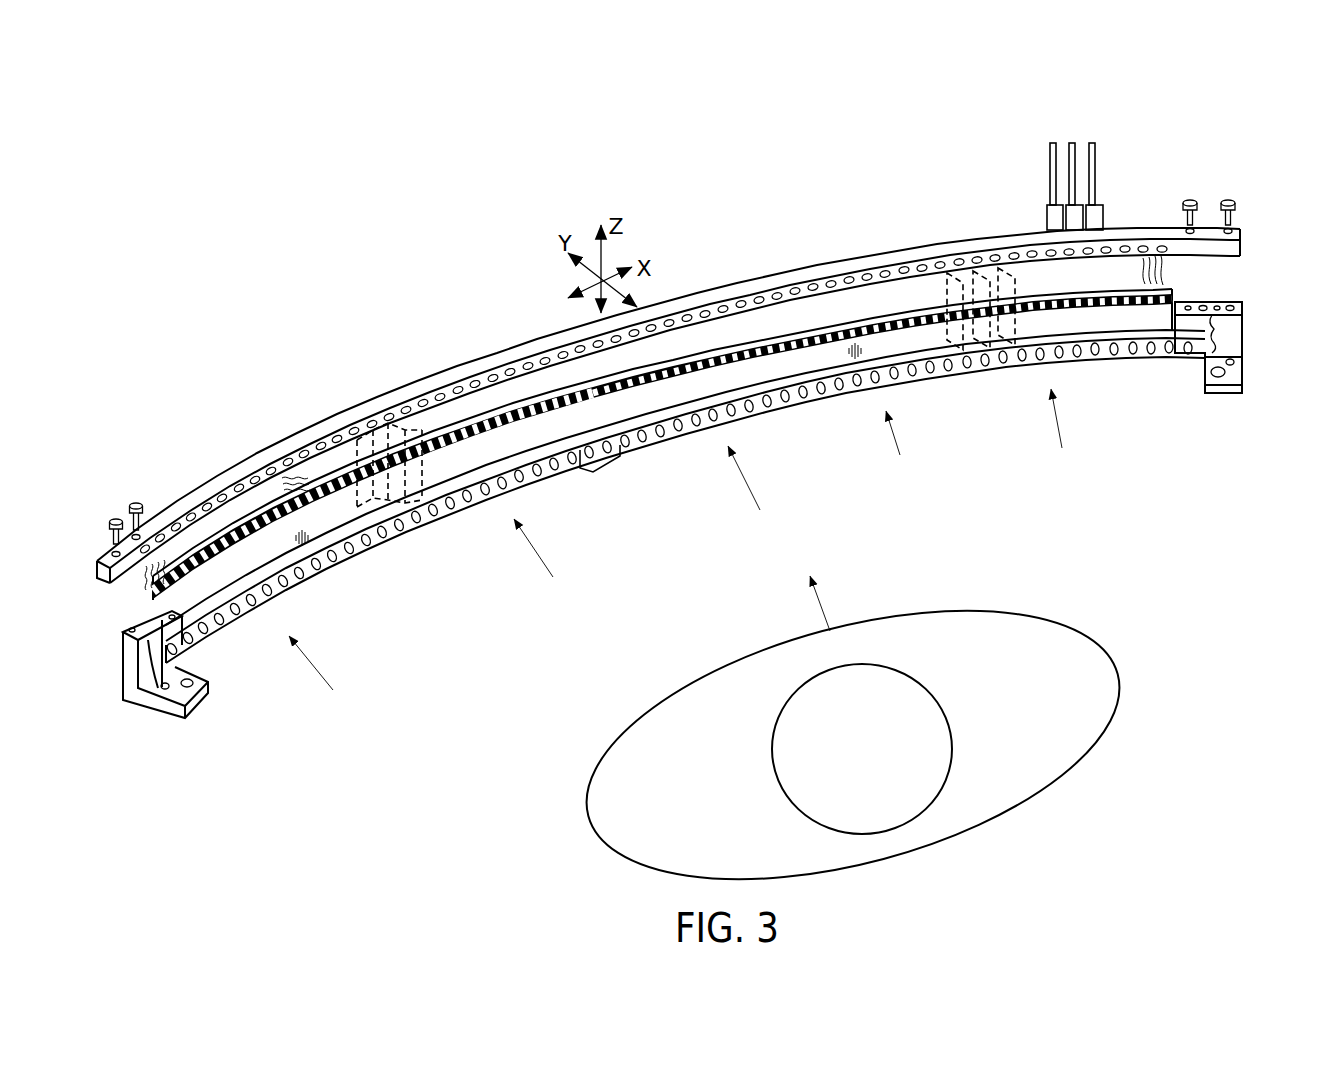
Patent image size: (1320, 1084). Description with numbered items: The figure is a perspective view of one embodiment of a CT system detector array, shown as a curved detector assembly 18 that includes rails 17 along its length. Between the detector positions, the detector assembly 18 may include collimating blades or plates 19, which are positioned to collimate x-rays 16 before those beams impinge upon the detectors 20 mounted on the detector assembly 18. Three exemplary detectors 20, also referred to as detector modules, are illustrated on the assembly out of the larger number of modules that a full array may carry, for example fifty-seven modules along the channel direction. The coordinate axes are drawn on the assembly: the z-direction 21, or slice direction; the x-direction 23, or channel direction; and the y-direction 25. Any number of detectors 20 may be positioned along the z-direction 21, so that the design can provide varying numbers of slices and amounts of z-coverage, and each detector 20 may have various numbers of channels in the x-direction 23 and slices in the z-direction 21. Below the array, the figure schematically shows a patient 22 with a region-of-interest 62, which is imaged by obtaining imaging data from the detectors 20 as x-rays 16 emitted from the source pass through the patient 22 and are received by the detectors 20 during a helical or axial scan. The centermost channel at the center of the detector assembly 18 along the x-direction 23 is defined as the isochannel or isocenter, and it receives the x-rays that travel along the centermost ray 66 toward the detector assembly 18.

The x-rays 16 is at (547, 577).
The rails 17 is at (1228, 331).
The detector assembly 18 is at (419, 360).
The collimating blades or plates 19 is at (392, 530).
The detectors 20 is at (1097, 160).
The z-direction 21 is at (598, 274).
The patient 22 is at (1130, 679).
The x-direction 23 is at (618, 266).
The y-direction 25 is at (582, 283).
The region-of-interest 62 is at (950, 781).
The centermost ray 66 is at (818, 600).